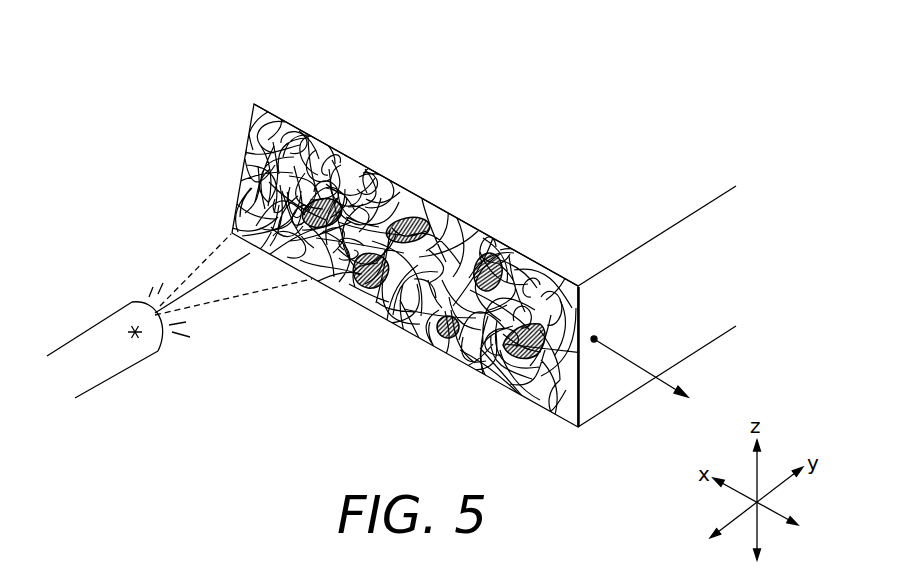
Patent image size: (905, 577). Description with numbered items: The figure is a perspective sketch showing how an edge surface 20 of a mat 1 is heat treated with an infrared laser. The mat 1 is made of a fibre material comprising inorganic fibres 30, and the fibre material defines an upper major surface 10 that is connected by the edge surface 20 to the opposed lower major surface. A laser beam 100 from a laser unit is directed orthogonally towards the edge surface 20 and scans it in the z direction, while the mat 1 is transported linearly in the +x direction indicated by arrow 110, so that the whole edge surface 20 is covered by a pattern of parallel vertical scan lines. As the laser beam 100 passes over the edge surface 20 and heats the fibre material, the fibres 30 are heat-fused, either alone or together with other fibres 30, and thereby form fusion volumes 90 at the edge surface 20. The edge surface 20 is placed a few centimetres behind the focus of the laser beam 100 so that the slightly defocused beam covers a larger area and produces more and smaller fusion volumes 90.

The mat 1 is at (652, 92).
The first, upper major surface 10 is at (578, 164).
The edge surface 20 is at (446, 218).
The fibres 30 is at (353, 176).
The fusion volumes 90 is at (403, 217).
The laser beam 100 is at (230, 268).
The arrow 110 is at (637, 362).